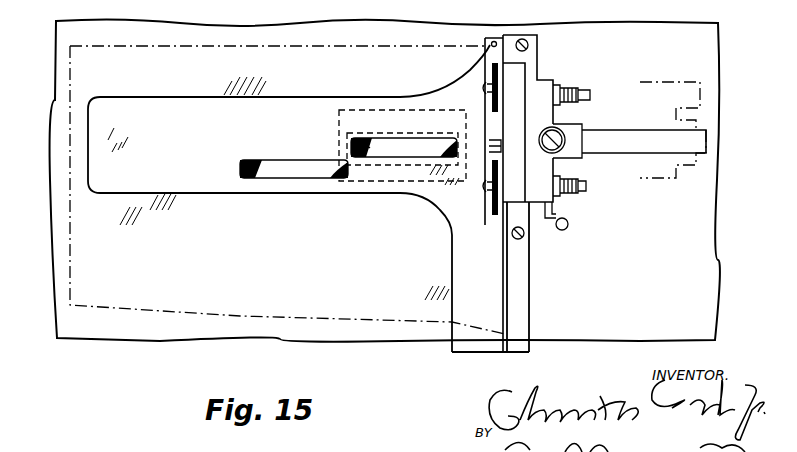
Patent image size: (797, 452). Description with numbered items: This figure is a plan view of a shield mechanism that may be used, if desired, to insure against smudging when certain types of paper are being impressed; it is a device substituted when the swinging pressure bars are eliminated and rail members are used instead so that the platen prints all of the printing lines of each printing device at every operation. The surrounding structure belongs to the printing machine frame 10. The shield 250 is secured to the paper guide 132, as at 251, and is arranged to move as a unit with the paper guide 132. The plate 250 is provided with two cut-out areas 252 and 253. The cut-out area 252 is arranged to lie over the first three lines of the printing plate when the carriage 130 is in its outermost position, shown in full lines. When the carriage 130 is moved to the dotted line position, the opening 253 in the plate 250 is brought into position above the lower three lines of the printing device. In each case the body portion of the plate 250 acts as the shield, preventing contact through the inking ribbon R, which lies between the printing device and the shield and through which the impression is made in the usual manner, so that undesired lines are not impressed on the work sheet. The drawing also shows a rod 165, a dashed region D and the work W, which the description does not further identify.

The frame 10 is at (642, 275).
The carriage 130 is at (545, 83).
The paper guide 132 is at (490, 277).
The actuating rod 165 is at (630, 130).
The shield 250 is at (289, 198).
The shield attachment point 251 is at (486, 206).
The cut-out area 252 is at (390, 152).
The cut-out area 253 is at (283, 178).
The inked ribbon R is at (358, 138).
The dashed region D is at (413, 110).
The work W is at (383, 325).